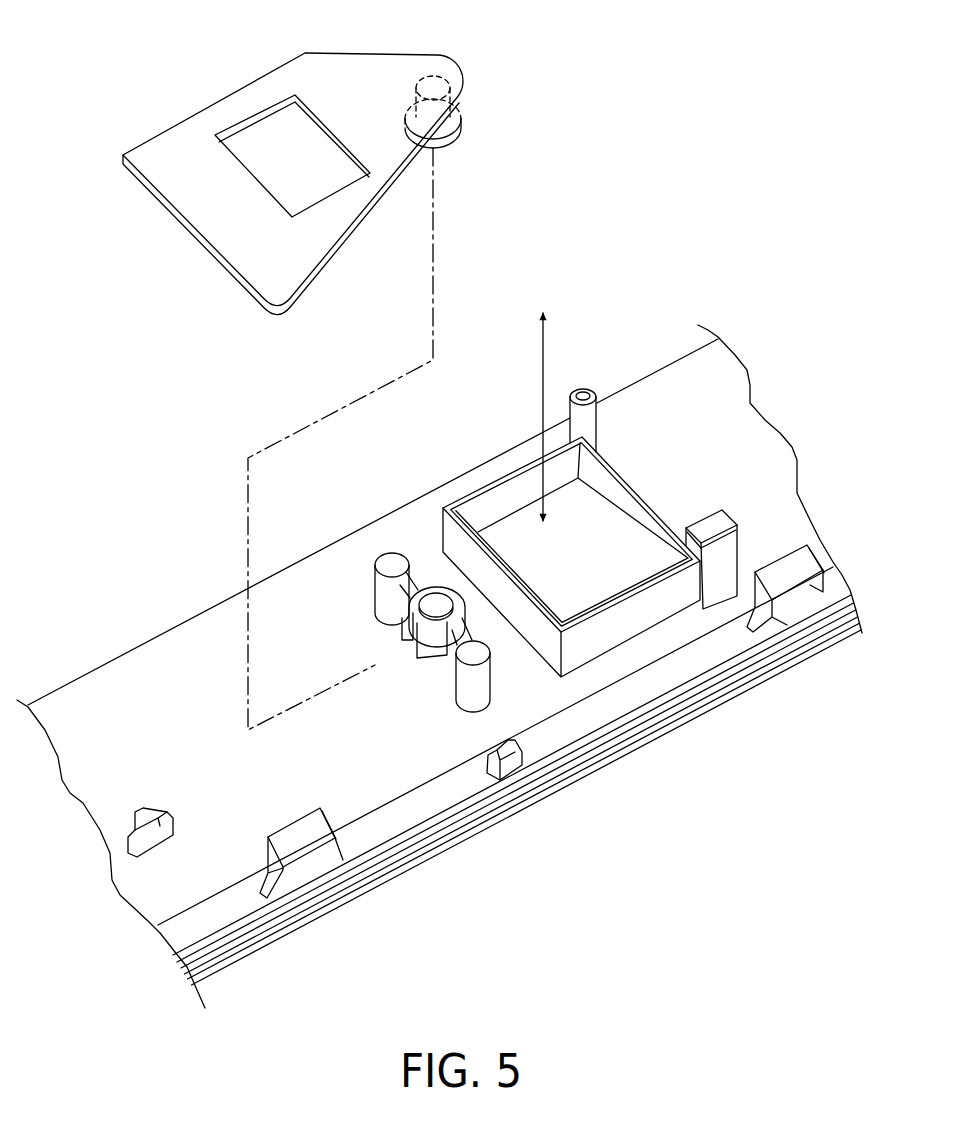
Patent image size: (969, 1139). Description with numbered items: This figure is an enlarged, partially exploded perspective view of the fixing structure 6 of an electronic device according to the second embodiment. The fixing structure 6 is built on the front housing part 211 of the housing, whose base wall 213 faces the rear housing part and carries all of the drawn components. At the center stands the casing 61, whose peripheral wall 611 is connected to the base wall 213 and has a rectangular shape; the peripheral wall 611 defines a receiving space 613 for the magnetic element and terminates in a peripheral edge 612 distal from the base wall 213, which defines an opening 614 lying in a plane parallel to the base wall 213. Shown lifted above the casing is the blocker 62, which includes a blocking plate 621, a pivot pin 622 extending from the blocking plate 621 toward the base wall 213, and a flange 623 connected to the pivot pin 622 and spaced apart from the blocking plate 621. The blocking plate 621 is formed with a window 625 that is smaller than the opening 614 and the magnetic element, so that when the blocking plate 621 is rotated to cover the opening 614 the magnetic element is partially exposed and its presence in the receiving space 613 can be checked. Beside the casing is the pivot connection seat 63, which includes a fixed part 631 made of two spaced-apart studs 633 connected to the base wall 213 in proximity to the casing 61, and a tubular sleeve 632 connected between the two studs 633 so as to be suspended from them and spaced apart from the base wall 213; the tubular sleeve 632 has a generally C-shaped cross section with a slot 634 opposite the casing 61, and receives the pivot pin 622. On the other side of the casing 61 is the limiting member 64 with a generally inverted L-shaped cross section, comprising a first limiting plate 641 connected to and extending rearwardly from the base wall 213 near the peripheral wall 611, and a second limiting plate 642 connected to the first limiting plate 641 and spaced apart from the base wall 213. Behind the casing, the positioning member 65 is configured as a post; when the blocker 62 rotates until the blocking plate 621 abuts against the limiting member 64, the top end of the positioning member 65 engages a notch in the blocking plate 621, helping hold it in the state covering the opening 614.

The fixing structure 6 is at (584, 142).
The front housing part 211 is at (685, 351).
The base wall 213 is at (735, 390).
The casing 61 is at (511, 465).
The peripheral wall 611 is at (638, 618).
The peripheral edge 612 is at (638, 489).
The receiving space 613 is at (498, 542).
The opening 614 is at (581, 501).
The blocker 62 is at (226, 85).
The blocking plate 621 is at (172, 147).
The pivot pin 622 is at (457, 120).
The flange 623 is at (453, 138).
The window 625 is at (272, 137).
The pivot connection seat 63 is at (385, 545).
The fixed part 631 is at (360, 564).
The tubular sleeve 632 is at (430, 647).
The studs 633 is at (384, 600).
The slot 634 is at (405, 628).
The limiting member 64 is at (725, 611).
The first limiting plate 641 is at (726, 557).
The second limiting plate 642 is at (715, 520).
The positioning member 65 is at (586, 387).